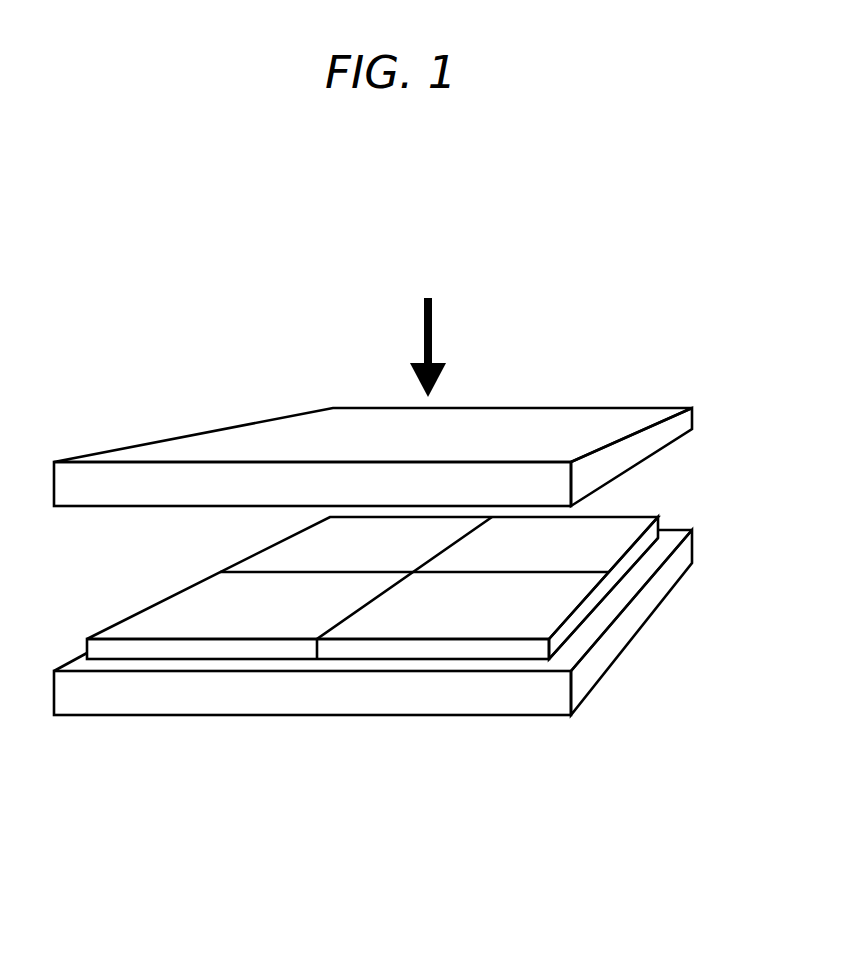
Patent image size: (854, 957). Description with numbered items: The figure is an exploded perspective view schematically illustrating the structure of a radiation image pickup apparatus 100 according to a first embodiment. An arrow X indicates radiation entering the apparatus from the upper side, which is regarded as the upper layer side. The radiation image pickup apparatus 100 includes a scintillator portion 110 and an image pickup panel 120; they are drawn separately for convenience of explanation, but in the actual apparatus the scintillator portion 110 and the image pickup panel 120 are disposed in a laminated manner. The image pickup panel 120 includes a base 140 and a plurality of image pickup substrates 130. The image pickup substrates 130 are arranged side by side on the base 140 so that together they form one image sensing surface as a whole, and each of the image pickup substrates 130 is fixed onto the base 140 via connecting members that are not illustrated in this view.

The radiation image pickup apparatus 100 is at (171, 337).
The scintillator portion 110 is at (598, 408).
The image pickup panel 120 is at (628, 583).
The image pickup substrates 130 is at (248, 557).
The base 140 is at (350, 715).